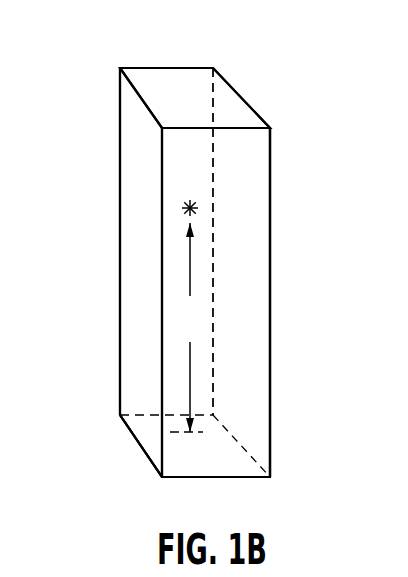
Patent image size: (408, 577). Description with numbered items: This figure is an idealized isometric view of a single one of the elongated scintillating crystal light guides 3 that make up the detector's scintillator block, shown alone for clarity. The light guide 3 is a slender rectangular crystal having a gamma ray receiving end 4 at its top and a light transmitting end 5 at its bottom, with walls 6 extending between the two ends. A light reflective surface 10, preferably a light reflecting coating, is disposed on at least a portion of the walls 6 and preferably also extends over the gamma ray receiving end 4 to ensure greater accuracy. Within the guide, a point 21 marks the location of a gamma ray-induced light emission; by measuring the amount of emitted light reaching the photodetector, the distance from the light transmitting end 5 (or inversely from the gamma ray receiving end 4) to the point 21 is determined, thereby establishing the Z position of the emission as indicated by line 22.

The light guide 3 is at (275, 238).
The gamma ray receiving end 4 is at (173, 78).
The light transmitting end 5 is at (182, 450).
The walls 6 is at (255, 182).
The light reflective surface 10 is at (147, 183).
The point of gamma ray-induced light emission 21 is at (198, 210).
The line 22 is at (190, 266).